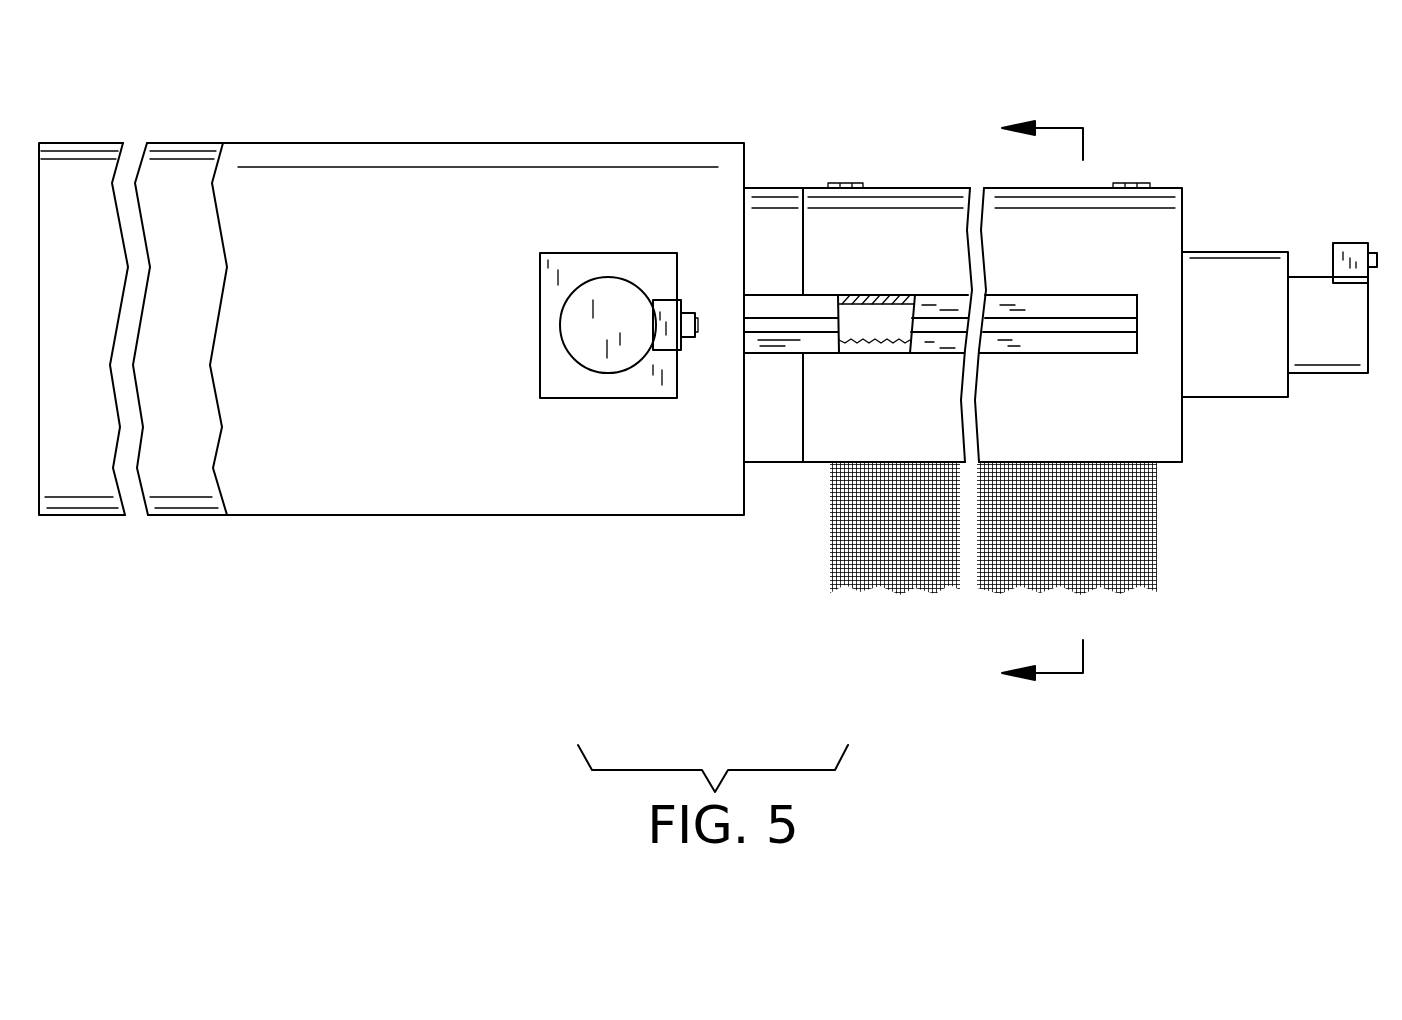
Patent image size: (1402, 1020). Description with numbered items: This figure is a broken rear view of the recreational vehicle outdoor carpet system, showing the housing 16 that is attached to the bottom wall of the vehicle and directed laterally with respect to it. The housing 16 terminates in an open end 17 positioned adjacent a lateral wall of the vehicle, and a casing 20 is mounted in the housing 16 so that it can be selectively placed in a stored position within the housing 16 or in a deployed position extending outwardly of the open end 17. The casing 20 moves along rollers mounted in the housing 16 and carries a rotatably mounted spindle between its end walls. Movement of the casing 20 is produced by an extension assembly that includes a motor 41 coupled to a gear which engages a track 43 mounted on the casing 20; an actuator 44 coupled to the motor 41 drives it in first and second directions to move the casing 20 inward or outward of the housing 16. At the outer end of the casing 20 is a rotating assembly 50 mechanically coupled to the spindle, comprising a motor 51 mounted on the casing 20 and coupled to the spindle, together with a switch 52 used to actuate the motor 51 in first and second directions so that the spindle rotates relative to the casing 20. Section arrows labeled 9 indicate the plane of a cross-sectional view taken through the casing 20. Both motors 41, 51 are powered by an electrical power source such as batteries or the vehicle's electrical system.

The housing 16 is at (318, 142).
The open end 17 is at (747, 167).
The casing 20 is at (768, 442).
The motor 41 is at (607, 330).
The track 43 is at (883, 340).
The actuator 44 is at (690, 340).
The rotating assembly 50 is at (1274, 301).
The motor 51 is at (1330, 373).
The switch 52 is at (1377, 250).
The section line 9- 9 is at (1018, 406).